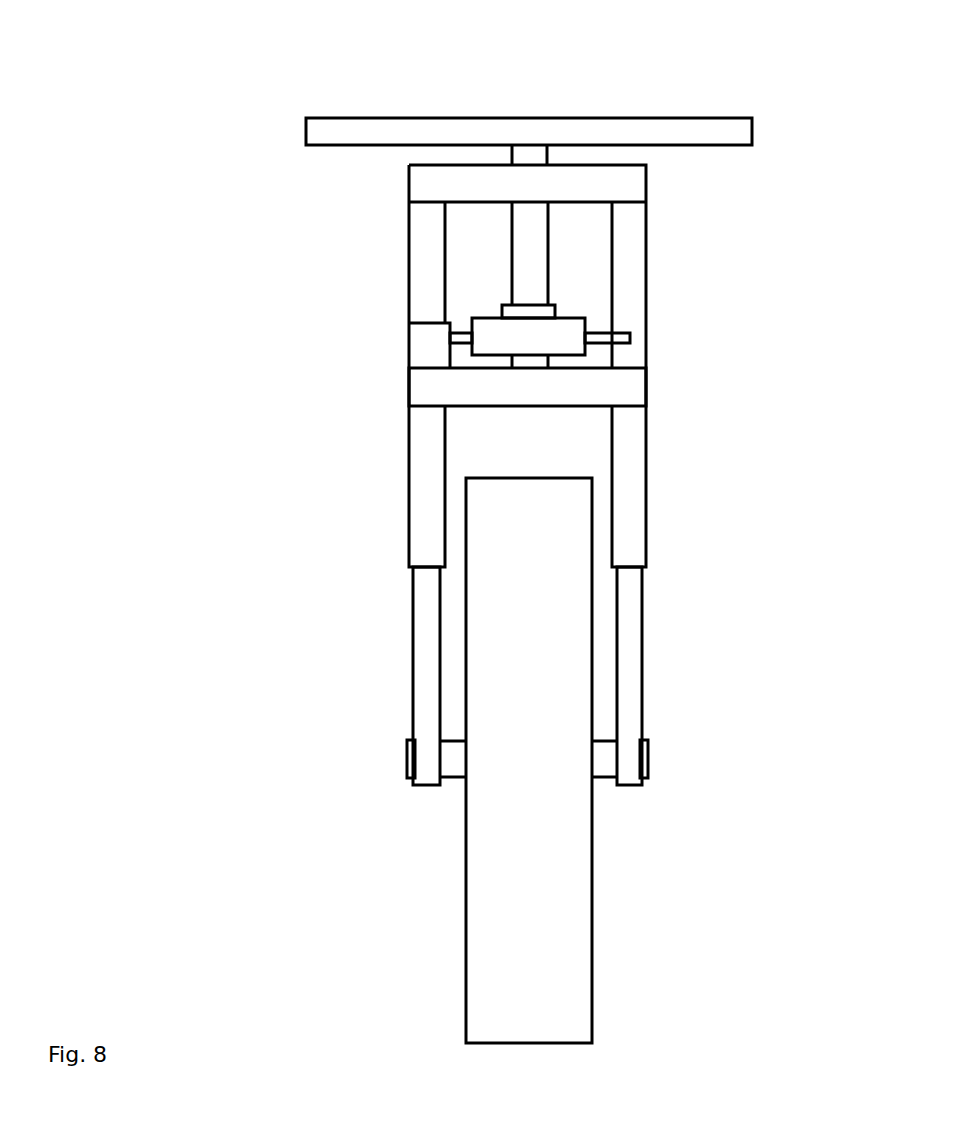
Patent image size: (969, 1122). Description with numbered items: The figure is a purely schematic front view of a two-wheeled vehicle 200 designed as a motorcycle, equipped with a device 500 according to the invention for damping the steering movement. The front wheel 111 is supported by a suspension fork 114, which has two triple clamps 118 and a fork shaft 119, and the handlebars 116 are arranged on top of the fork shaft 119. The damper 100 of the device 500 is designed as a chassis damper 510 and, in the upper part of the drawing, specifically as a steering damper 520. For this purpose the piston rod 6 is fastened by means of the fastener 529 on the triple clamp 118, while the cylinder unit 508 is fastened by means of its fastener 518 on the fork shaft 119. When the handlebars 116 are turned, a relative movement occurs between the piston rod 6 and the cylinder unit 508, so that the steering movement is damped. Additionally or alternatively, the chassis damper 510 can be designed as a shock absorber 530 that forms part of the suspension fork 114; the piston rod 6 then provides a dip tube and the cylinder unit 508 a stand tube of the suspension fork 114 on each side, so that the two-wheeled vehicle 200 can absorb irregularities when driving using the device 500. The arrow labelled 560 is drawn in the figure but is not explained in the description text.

The device 500 is at (134, 53).
The two-wheeled vehicle 200 is at (200, 137).
The arrangement 560 is at (791, 243).
The damper 100 is at (270, 286).
The handlebars 116 is at (362, 118).
The suspension fork 114 is at (400, 427).
The fork shaft 119 is at (522, 220).
The fastener 518 is at (556, 310).
The steering damper 520 is at (488, 317).
The cylinder unit 508 is at (578, 318).
The piston rod 6 is at (603, 333).
The fastener 529 is at (422, 343).
The triple clamp 118 is at (423, 392).
The chassis damper 510 is at (462, 315).
The shock absorber 530 is at (407, 553).
The front wheel 111 is at (463, 948).